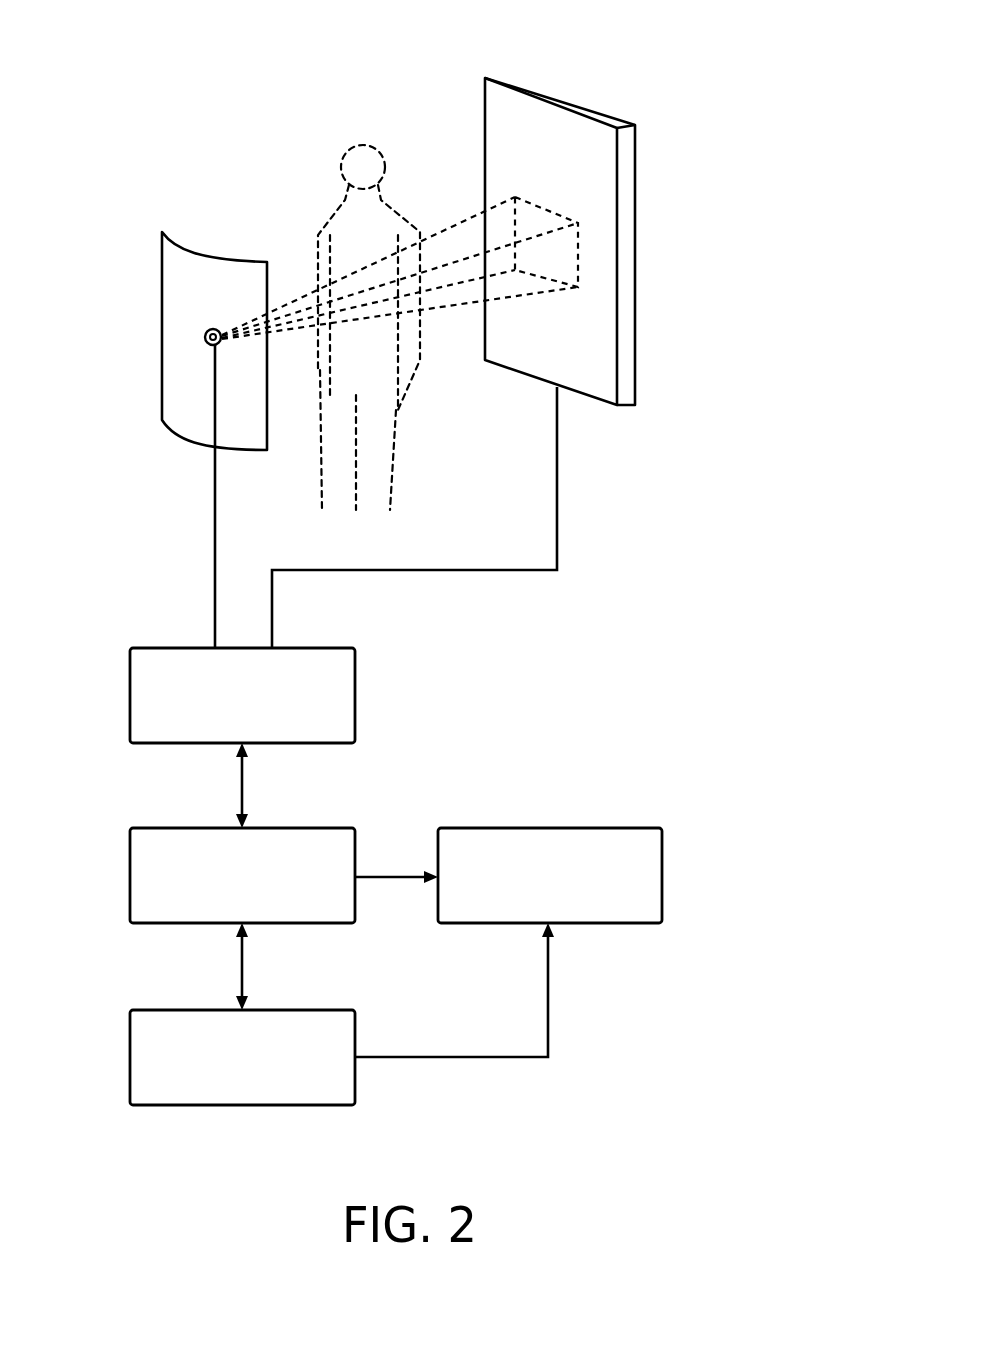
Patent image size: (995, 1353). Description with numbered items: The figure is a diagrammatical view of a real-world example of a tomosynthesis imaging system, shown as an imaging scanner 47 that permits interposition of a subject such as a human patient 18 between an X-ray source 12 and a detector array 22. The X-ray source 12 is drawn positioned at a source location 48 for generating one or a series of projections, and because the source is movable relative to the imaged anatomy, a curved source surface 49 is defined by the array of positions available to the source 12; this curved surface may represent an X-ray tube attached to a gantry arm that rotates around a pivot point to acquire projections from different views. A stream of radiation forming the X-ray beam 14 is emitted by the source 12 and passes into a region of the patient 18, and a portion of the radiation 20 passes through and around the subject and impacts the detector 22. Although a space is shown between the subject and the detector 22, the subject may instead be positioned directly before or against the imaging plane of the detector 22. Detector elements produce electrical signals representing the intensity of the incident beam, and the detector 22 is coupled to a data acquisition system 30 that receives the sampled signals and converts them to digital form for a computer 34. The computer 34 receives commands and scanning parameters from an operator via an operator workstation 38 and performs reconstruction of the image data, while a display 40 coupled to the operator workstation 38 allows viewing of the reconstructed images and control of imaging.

The imaging scanner 47 is at (147, 145).
The curved source surface 49 is at (197, 256).
The X-ray source 12 is at (205, 343).
The source location 48 is at (206, 328).
The X-ray beam 14 is at (289, 290).
The patient 18 is at (325, 215).
The portion of the radiation 20 is at (449, 215).
The detector array 22 is at (570, 96).
The data acquisition system 30 is at (130, 697).
The computer 34 is at (130, 877).
The operator workstation 38 is at (130, 1057).
The display 40 is at (662, 877).